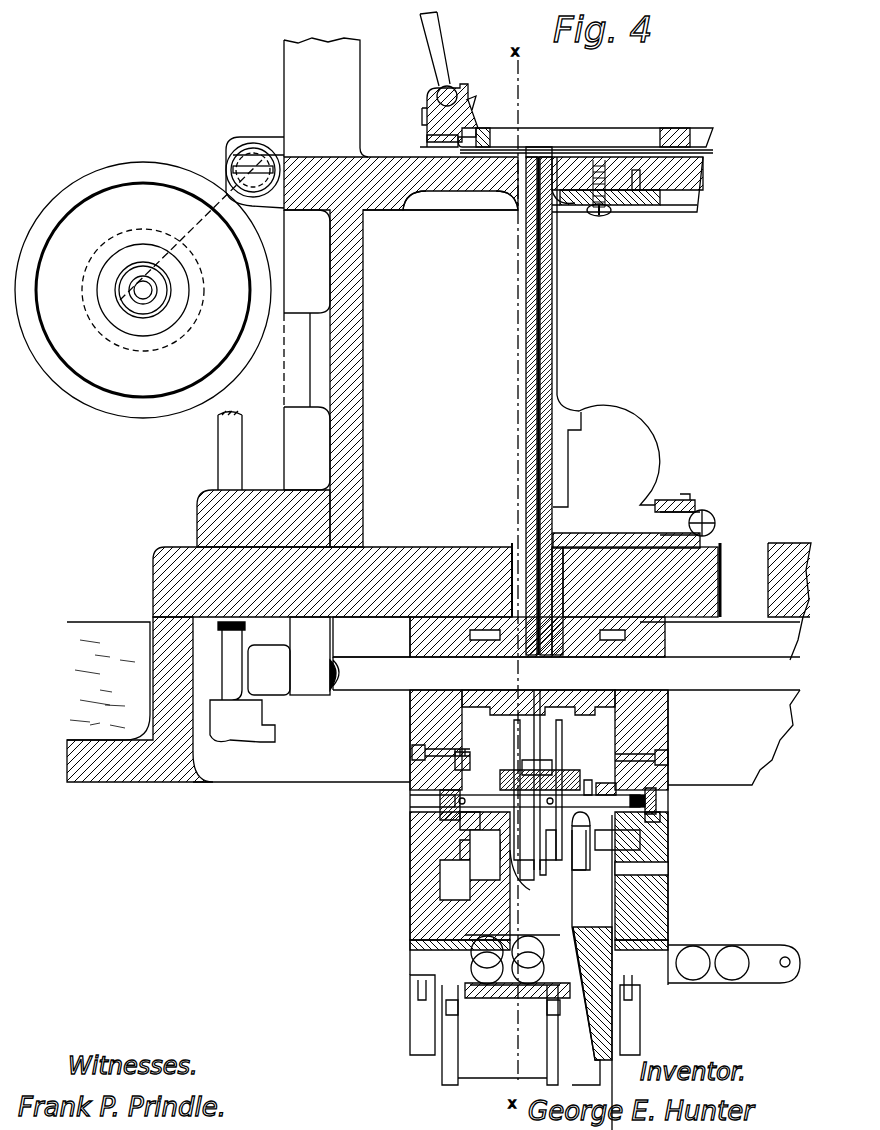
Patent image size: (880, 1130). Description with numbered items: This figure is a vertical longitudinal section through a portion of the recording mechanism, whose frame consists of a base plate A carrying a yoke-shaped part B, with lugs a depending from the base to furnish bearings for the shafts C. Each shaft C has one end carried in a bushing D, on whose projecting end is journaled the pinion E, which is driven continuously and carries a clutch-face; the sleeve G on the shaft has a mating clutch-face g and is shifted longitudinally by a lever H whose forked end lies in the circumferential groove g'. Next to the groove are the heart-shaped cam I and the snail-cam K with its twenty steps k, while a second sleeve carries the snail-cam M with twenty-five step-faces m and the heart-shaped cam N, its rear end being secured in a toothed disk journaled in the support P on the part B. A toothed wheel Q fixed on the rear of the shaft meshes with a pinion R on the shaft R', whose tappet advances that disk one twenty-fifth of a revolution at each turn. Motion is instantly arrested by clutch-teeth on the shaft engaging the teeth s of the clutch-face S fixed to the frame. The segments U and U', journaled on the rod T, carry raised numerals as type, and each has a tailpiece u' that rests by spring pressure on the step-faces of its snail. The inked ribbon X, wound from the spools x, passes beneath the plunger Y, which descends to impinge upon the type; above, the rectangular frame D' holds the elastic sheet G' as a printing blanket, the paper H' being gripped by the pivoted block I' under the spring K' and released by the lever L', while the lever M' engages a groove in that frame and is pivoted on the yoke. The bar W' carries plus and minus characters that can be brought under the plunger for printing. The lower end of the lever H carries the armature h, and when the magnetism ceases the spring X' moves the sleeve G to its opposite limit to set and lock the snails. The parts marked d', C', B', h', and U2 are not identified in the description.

The inked ribbon X is at (244, 166).
The spool x is at (113, 412).
The lever M' is at (448, 49).
The knob d' is at (457, 80).
The lever L' is at (481, 92).
The horizontally-pivoted block I' is at (489, 126).
The spring K' is at (431, 115).
The sheet of rubber or felt G' is at (545, 126).
The open rectangular frame D' is at (585, 119).
The round plunger Y is at (713, 151).
The sheet of paper H' is at (460, 215).
The bar W' is at (634, 352).
The segment U' is at (514, 406).
The segment U is at (565, 406).
The rectangular plate A is at (185, 547).
The lever C' is at (267, 679).
The bearing B' is at (360, 688).
The yoke-shaped part B is at (433, 801).
The toothed wheel Q is at (412, 762).
The clutch-face S is at (455, 801).
The teeth s is at (660, 816).
The shaft C is at (420, 816).
The pinion R is at (430, 839).
The shaft R' is at (443, 867).
The lug a is at (410, 910).
The support P is at (478, 752).
The tailpiece u' is at (526, 780).
The heart-shaped cam N is at (526, 760).
The heart-shaped cam I is at (539, 785).
The sleeve G is at (540, 759).
The clutch-face g is at (589, 770).
The pinion E is at (608, 783).
The bushing D is at (648, 845).
The circumferential groove g' is at (587, 831).
The pawl h' is at (591, 848).
The snail-cam K is at (555, 847).
The step k is at (545, 872).
The step-face m is at (528, 875).
The snail-cam M is at (527, 884).
The lever H is at (592, 972).
The spring X' is at (632, 958).
The cup U2 is at (485, 1030).
The armature h is at (629, 1015).
The rod T is at (566, 673).